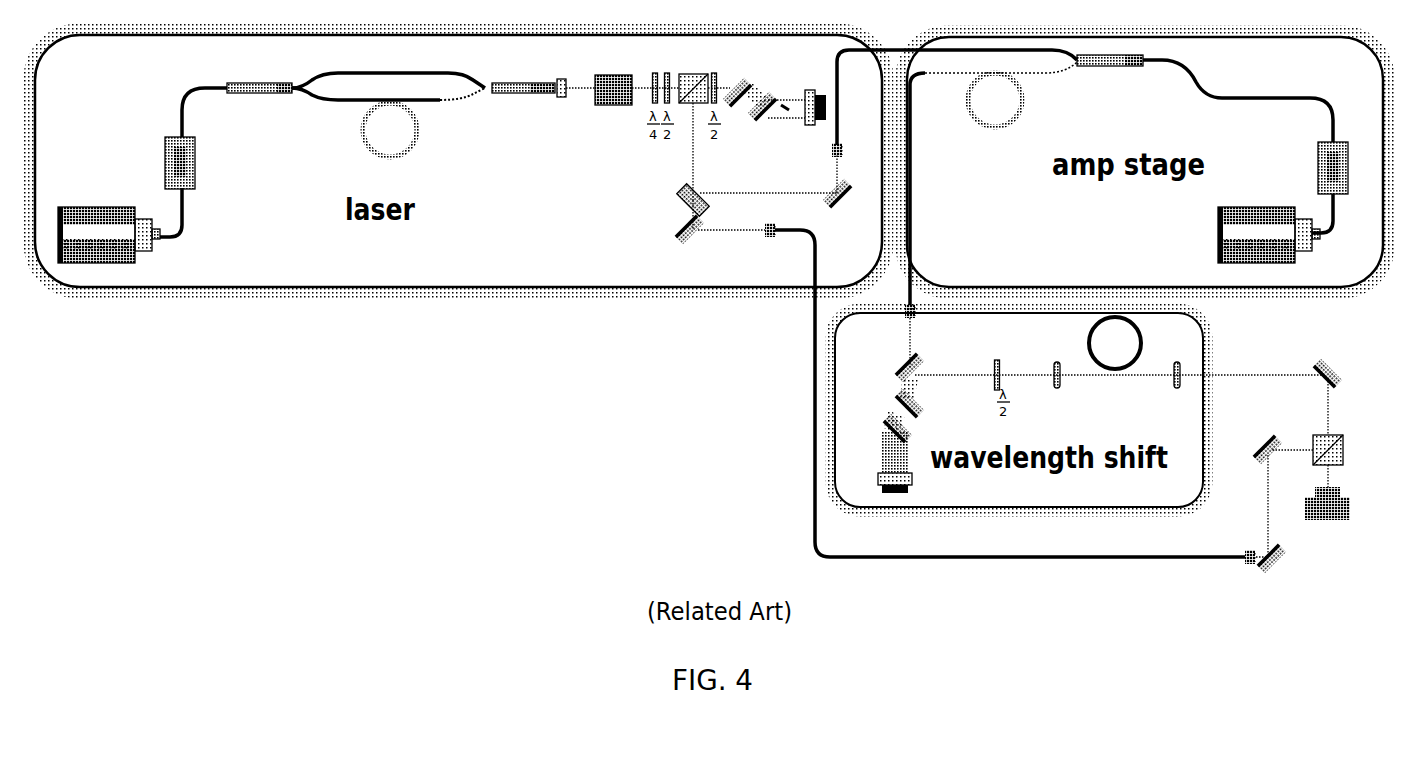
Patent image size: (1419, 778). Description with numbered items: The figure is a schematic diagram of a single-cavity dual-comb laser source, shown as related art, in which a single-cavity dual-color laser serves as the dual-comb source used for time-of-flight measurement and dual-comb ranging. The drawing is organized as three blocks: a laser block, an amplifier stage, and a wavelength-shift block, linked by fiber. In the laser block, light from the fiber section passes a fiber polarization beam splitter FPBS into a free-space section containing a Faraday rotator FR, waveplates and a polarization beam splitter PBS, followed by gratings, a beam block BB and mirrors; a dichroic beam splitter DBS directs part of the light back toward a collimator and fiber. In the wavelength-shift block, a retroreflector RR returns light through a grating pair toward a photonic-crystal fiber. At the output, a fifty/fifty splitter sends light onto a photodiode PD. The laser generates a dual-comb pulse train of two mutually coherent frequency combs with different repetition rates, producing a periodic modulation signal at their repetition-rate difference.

The fiber polarization beam splitter FPBS is at (523, 75).
The Faraday rotator FR is at (613, 81).
The polarization beam splitter PBS is at (690, 79).
The beam block BB is at (785, 95).
The dichroic beam splitter DBS is at (674, 200).
The retroreflector RR is at (878, 462).
The photodiode PD is at (1342, 503).